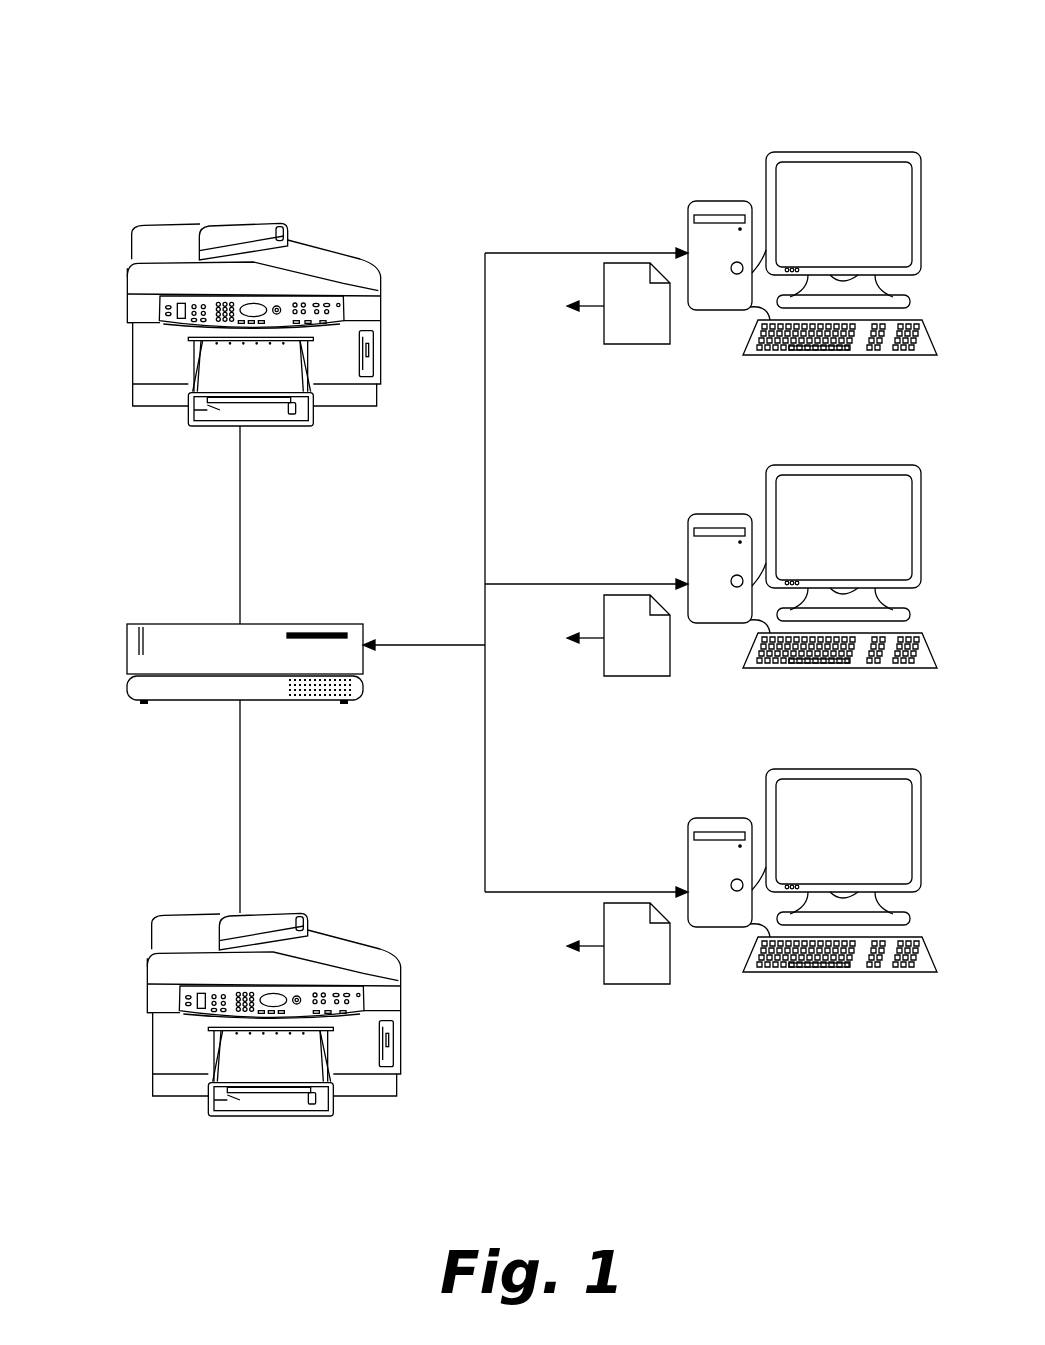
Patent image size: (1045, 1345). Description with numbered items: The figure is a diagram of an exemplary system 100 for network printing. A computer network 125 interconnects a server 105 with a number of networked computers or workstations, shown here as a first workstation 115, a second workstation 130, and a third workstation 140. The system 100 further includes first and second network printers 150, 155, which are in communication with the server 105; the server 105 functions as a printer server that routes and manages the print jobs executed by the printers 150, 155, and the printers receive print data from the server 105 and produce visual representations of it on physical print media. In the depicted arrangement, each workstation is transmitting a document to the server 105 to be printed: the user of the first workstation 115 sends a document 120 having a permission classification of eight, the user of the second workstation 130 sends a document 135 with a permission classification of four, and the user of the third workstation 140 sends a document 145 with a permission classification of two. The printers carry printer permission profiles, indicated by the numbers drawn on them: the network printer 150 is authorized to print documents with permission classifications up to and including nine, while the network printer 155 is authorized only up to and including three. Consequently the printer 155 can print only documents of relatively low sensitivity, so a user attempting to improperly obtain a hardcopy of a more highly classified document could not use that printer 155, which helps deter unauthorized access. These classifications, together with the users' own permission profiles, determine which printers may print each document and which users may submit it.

The system 100 is at (152, 68).
The server 105 is at (183, 702).
The first workstation 115 is at (709, 160).
The document 120 is at (642, 334).
The computer network 125 is at (466, 257).
The second workstation 130 is at (734, 468).
The document 135 is at (642, 666).
The third workstation 140 is at (734, 779).
The document 145 is at (642, 976).
The first network printer 150 is at (176, 1078).
The second network printer 155 is at (165, 385).